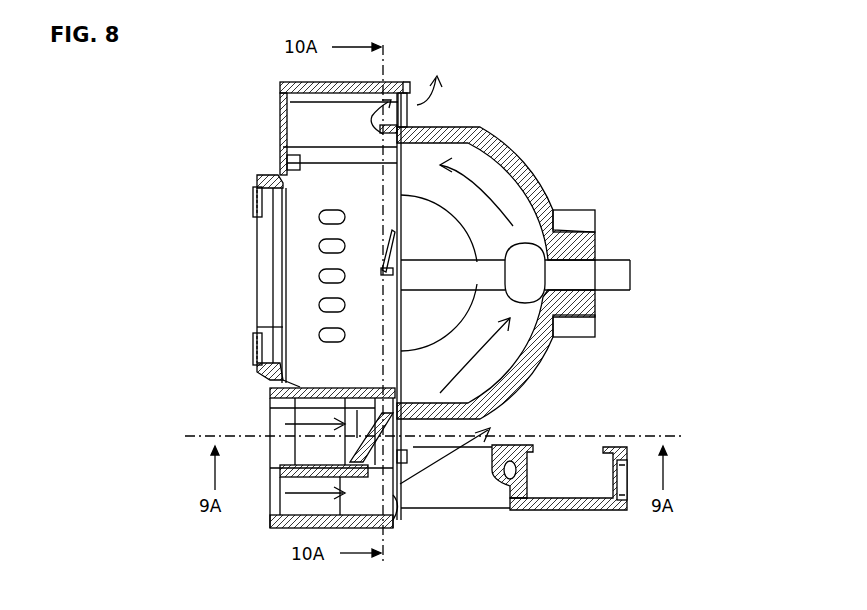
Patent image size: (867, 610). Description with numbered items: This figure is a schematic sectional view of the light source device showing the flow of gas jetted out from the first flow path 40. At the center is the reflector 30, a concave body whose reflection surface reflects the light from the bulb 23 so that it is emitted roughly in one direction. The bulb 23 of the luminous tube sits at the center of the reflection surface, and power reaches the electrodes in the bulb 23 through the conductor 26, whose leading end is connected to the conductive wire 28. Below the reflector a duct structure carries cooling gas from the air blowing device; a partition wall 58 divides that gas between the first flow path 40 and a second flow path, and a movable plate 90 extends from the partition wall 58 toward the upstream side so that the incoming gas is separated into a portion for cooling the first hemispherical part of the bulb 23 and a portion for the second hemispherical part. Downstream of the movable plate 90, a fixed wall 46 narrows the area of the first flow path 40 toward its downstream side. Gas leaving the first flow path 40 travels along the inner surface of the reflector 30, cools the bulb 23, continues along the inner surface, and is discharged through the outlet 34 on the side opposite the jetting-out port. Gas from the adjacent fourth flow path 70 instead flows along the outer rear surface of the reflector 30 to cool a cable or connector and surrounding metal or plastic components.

The bulb 23 is at (532, 273).
The conductor 26 is at (383, 273).
The conductive wire 28 is at (383, 250).
The reflector 30 is at (520, 365).
The outlet 34 is at (402, 97).
The first flow path 40 is at (282, 425).
The fixed wall 46 is at (405, 468).
The partition wall 58 is at (350, 408).
The fourth flow path 70 is at (357, 505).
The movable plate 90 is at (320, 447).